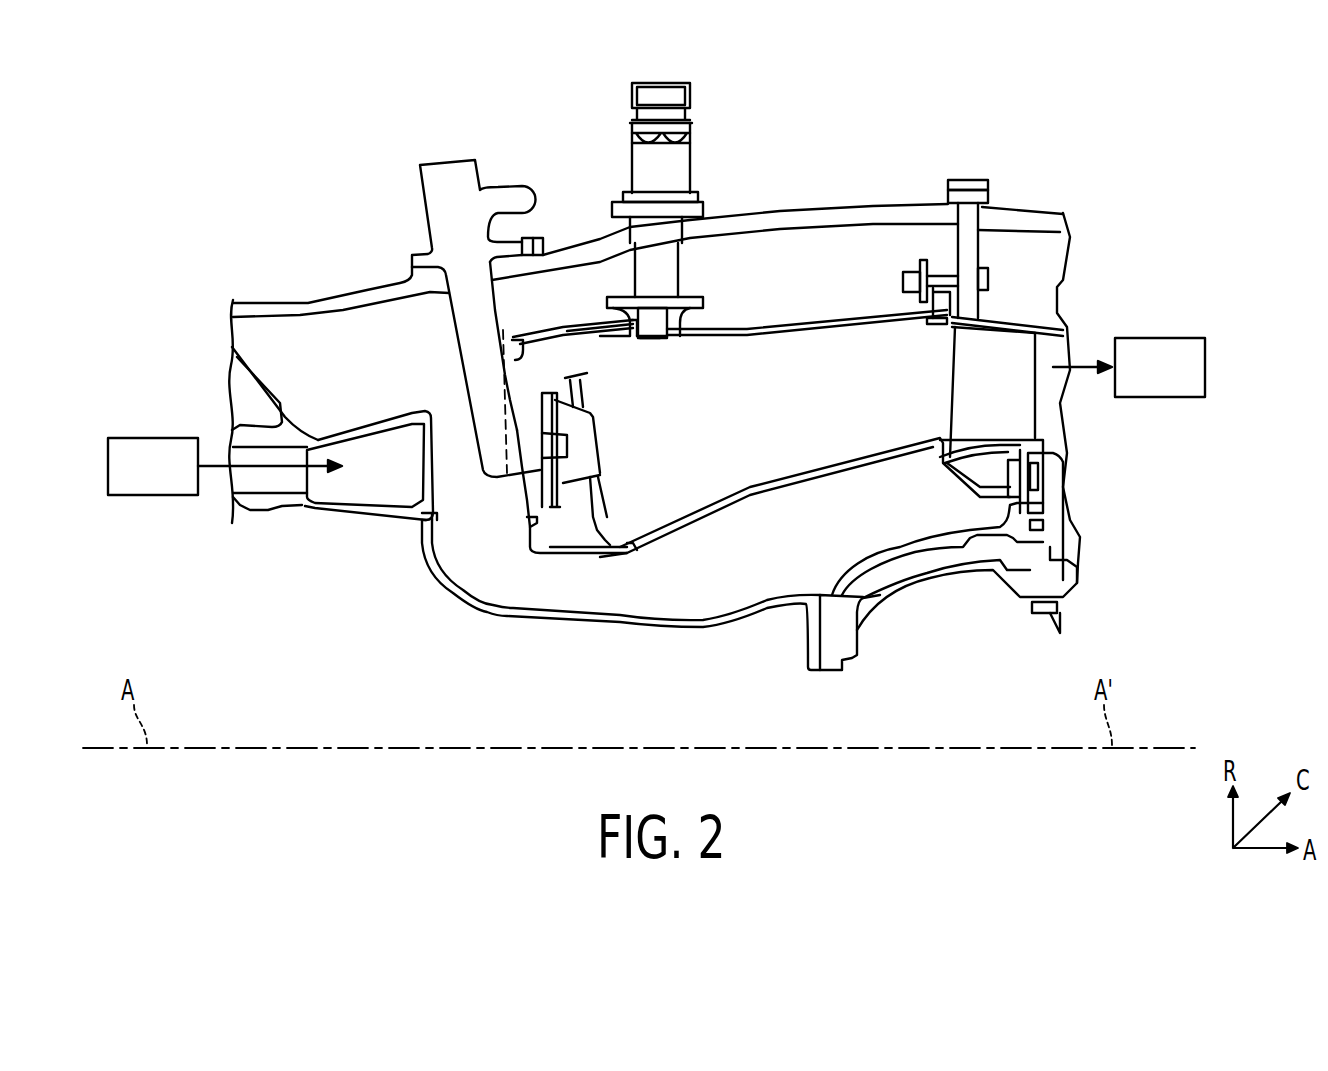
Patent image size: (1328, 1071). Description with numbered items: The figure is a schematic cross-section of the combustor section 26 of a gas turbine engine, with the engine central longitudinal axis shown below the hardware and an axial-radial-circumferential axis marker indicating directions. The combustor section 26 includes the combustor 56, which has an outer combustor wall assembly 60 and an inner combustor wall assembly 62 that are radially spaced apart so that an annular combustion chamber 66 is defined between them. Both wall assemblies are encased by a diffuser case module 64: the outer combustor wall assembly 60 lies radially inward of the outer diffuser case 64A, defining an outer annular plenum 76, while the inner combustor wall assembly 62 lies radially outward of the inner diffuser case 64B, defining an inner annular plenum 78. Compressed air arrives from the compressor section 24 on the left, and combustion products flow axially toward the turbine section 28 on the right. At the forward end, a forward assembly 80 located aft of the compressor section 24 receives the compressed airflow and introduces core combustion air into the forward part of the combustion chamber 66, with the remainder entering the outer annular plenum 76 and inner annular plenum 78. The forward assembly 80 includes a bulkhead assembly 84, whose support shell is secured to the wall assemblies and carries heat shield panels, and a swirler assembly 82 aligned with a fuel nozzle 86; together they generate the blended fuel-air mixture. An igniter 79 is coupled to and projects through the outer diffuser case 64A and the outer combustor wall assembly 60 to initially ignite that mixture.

The compressor section 24 is at (165, 483).
The combustor section 26 is at (985, 134).
The turbine section 28 is at (1170, 384).
The combustor 56 is at (890, 135).
The outer combustor wall assembly 60 is at (818, 305).
The inner combustor wall assembly 62 is at (786, 511).
The diffuser case module 64 is at (797, 197).
The outer diffuser case 64A is at (873, 208).
The inner diffuser case 64B is at (653, 625).
The annular combustion chamber 66 is at (808, 426).
The outer annular plenum 76 is at (745, 278).
The inner annular plenum 78 is at (733, 579).
The igniter 79 is at (667, 187).
The forward assembly 80 is at (524, 568).
The swirler assembly 82 is at (610, 468).
The bulkhead assembly 84 is at (612, 376).
The fuel nozzle 86 is at (479, 278).